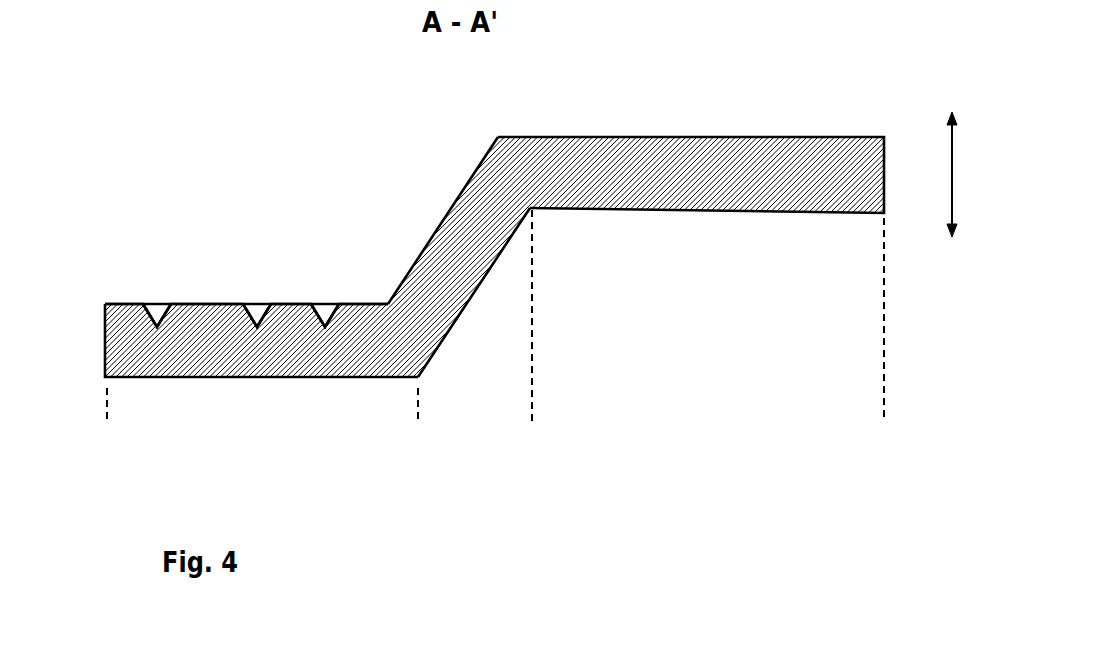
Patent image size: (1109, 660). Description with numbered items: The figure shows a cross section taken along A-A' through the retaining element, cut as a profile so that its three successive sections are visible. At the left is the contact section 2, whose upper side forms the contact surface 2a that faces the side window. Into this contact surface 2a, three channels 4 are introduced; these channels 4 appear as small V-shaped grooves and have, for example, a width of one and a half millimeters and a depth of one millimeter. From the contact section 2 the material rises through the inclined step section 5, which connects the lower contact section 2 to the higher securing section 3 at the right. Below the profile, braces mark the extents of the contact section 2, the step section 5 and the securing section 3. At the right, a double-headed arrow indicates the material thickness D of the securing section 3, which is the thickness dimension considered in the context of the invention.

The contact section 2 is at (108, 428).
The contact surface 2a is at (127, 301).
The securing section 3 is at (532, 428).
The channels 4 is at (323, 312).
The step section 5 is at (418, 428).
The thickness D is at (961, 174).